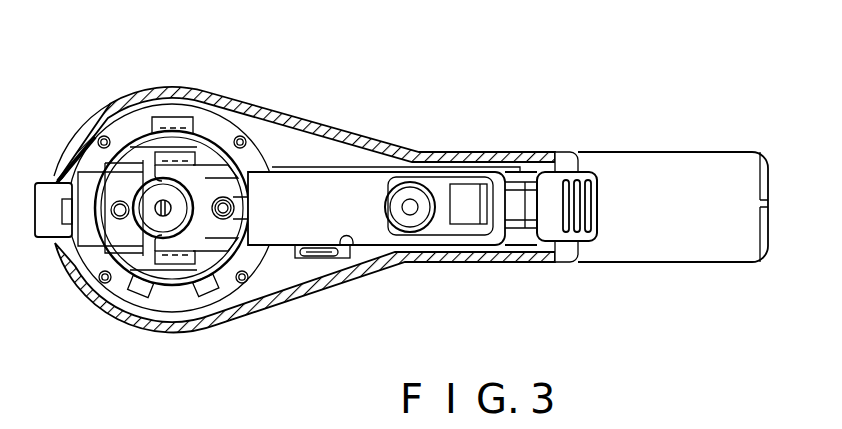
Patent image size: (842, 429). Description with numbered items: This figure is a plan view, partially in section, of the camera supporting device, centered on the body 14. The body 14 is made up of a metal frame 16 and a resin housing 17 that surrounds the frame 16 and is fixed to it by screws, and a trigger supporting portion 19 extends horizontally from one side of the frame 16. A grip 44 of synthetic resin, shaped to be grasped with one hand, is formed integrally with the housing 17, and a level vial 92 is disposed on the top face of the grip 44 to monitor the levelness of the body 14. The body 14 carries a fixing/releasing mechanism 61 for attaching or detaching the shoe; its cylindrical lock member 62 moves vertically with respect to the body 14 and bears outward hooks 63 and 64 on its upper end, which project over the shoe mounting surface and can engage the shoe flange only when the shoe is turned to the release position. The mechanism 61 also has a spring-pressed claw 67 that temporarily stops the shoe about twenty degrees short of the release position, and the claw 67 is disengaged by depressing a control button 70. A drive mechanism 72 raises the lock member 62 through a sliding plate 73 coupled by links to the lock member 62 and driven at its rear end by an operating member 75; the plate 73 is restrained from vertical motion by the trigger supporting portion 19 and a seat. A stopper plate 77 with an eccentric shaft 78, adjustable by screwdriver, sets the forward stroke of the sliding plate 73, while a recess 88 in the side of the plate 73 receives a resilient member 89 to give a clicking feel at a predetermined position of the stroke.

The body 14 is at (67, 263).
The metal frame 16 is at (120, 243).
The resin housing 17 is at (279, 109).
The trigger supporting portion 19 is at (457, 170).
The grip 44 is at (670, 255).
The fixing/releasing mechanism 61 is at (138, 118).
The cylindrical lock member 62 is at (228, 147).
The outward hook 63 is at (178, 118).
The outward hook 64 is at (140, 298).
The claw 67 is at (63, 176).
The control button 70 is at (48, 188).
The drive mechanism 72 is at (371, 165).
The sliding plate 73 is at (317, 170).
The operating member 75 is at (599, 174).
The stopper plate 77 is at (150, 222).
The eccentric shaft 78 is at (163, 216).
The recess 88 is at (352, 247).
The resilient member 89 is at (306, 258).
The level vial 92 is at (414, 200).